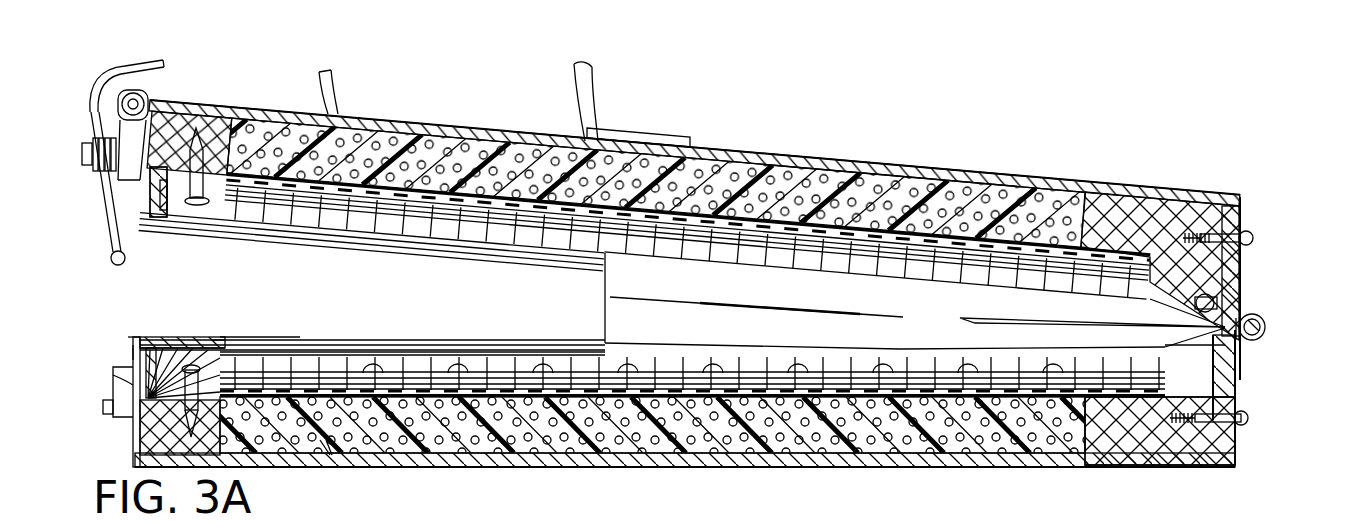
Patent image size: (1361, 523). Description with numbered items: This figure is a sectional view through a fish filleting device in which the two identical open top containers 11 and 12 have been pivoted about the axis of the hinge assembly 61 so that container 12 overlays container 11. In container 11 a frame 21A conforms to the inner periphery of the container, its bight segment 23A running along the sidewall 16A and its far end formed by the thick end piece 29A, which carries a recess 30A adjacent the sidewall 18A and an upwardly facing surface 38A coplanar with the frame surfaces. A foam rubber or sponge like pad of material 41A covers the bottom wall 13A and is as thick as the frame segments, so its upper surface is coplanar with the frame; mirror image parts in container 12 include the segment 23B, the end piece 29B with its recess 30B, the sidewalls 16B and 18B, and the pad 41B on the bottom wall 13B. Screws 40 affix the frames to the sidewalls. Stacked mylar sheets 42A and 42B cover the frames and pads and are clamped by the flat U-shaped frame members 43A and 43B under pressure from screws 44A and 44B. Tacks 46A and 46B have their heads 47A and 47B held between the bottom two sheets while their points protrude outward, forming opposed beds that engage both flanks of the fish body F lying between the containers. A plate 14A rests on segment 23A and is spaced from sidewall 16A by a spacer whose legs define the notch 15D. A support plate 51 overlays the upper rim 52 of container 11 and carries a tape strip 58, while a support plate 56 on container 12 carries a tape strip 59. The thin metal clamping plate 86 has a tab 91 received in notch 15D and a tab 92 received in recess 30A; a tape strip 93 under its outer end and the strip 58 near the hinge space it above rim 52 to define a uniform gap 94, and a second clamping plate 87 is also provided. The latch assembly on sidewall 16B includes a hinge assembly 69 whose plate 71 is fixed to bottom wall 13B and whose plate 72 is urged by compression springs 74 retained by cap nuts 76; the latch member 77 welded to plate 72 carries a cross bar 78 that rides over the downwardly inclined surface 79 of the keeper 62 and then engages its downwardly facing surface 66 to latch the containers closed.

The container 11 is at (677, 460).
The container 12 is at (805, 152).
The bottom wall 13A is at (610, 460).
The bottom wall 13B is at (890, 158).
The plate 14A is at (110, 407).
The notch 15D is at (143, 337).
The sidewall 16A is at (127, 385).
The sidewall 16B is at (143, 192).
The sidewall 18A is at (1230, 447).
The sidewall 18B is at (1240, 220).
The frame 21A is at (130, 440).
The segment 23A is at (157, 427).
The segment 23B is at (180, 120).
The end piece 29A is at (1128, 440).
The end piece 29B is at (1153, 195).
The recess 30A is at (1240, 370).
The recess 30B is at (1245, 272).
The upwardly facing surface 38A is at (1085, 322).
The screws 40 is at (1255, 240).
The foam rubber or sponge like pad of material 41A is at (793, 433).
The foam rubber or sponge like pad of material 41B is at (727, 177).
The mylar sheets 42A is at (457, 210).
The mylar sheets 42B is at (497, 220).
The U-shaped frame member 43A is at (213, 370).
The U-shaped frame 43B is at (217, 197).
The screws 44A is at (193, 367).
The screws 44B is at (197, 205).
The tacks 46A is at (343, 347).
The tacks 46B is at (400, 225).
The heads 47A is at (332, 455).
The heads 47B is at (435, 190).
The support plate 51 is at (1225, 346).
The upper rim 52 is at (270, 340).
The support plate 56 is at (1217, 298).
The tape strip 58 is at (1266, 327).
The tape strip 59 is at (1222, 306).
The hinge assembly 61 is at (1272, 332).
The keeper 62 is at (100, 357).
The downwardly facing surface 66 is at (113, 370).
The hinge assembly 69 is at (160, 90).
The plate 71 is at (175, 95).
The plate 72 is at (123, 135).
The compression spring 74 is at (123, 173).
The cap nut 76 is at (85, 152).
The latch member 77 is at (117, 233).
The cross bar 78 is at (116, 263).
The downwardly inclined surface 79 is at (128, 345).
The clamping plate 86 is at (213, 342).
The clamping plate 87 is at (463, 343).
The tab 91 is at (152, 340).
The tab 92 is at (1237, 392).
The tape strip 93 is at (157, 347).
The gap 94 is at (417, 347).
The fish body F is at (747, 257).